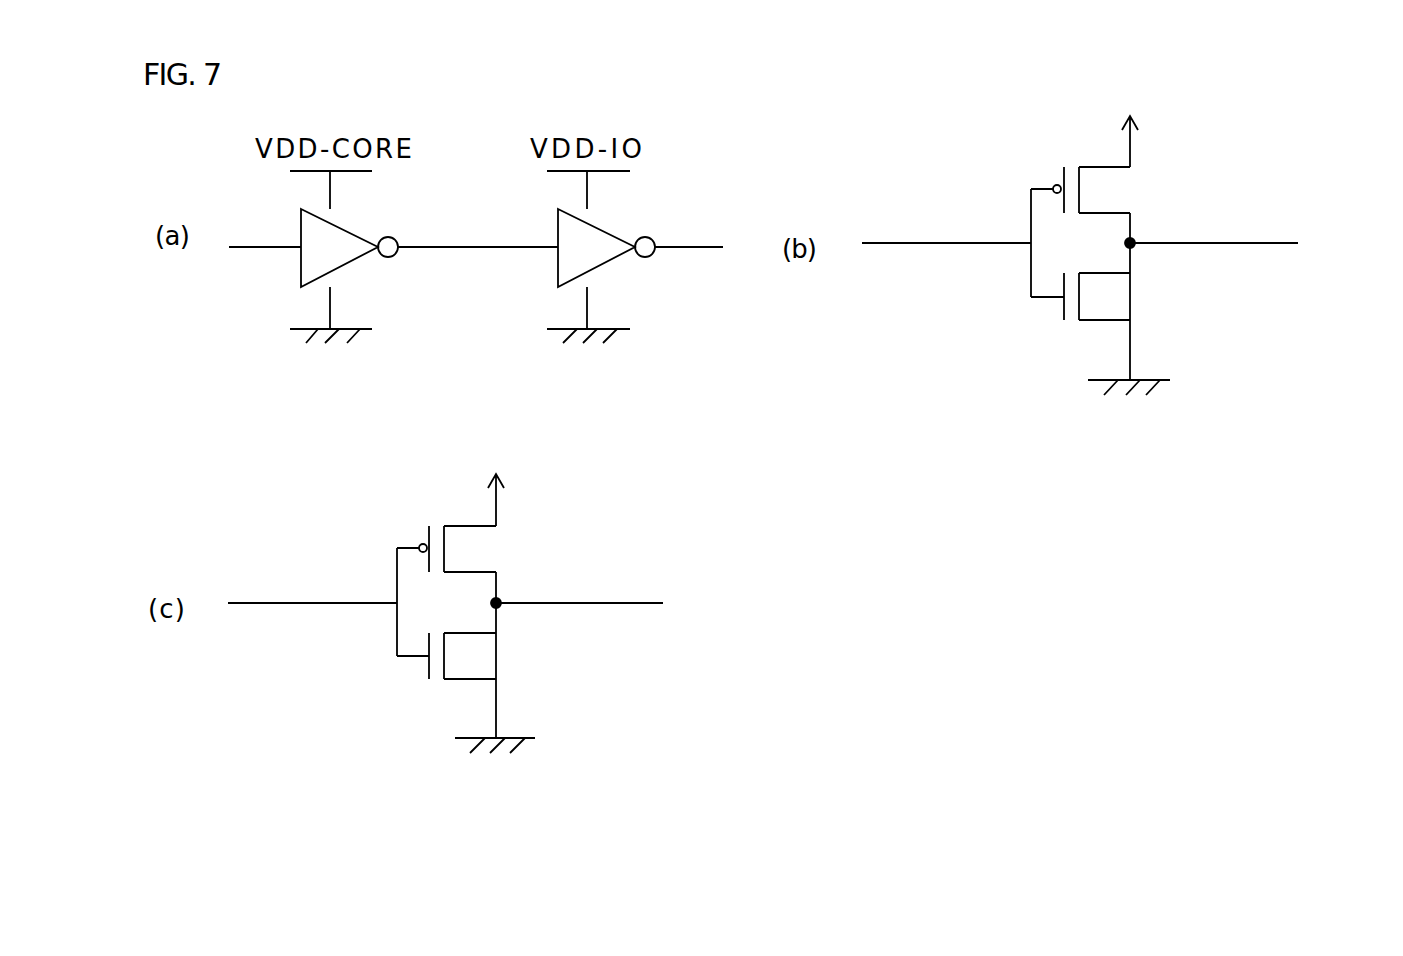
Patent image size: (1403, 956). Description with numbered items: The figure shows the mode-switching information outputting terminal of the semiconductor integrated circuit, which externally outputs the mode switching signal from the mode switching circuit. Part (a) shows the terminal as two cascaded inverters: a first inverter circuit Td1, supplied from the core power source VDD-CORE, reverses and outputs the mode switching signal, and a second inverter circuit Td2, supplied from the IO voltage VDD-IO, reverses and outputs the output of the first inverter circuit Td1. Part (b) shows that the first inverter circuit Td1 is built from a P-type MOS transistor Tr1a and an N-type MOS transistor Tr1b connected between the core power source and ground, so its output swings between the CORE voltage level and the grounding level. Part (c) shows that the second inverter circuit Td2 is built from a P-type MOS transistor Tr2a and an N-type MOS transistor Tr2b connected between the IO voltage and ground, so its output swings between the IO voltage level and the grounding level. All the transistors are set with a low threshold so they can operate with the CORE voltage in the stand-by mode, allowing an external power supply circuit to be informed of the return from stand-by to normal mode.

The first inverter circuit Td1 is at (301, 271).
The second inverter circuit Td2 is at (558, 271).
The P-type MOS transistor Tr1a is at (1128, 198).
The N-type MOS transistor Tr1b is at (1128, 293).
The P-type MOS transistor Tr2a is at (495, 555).
The N-type MOS transistor Tr2b is at (495, 653).